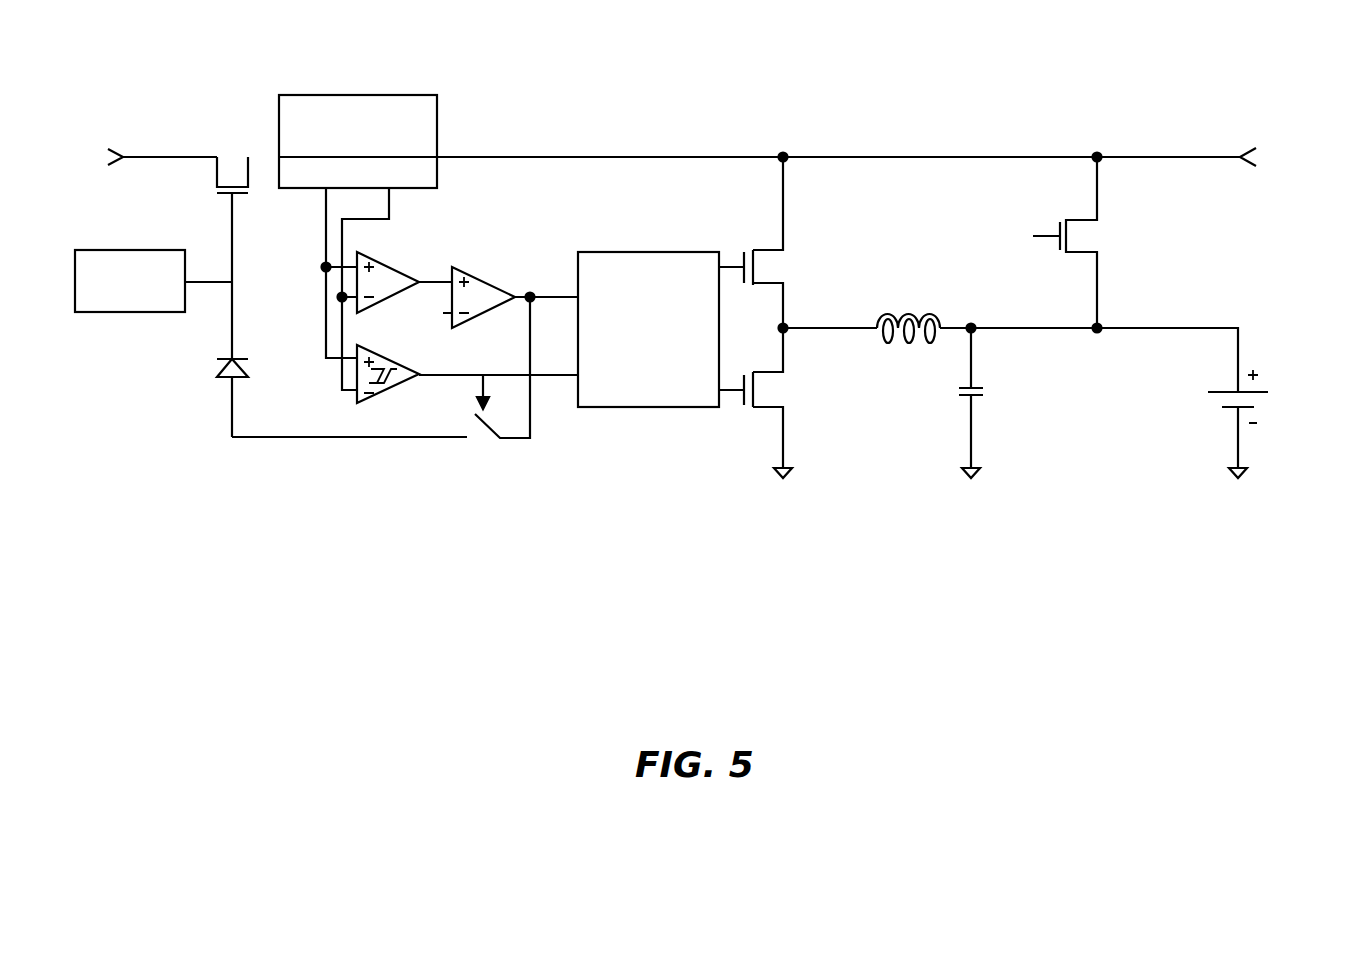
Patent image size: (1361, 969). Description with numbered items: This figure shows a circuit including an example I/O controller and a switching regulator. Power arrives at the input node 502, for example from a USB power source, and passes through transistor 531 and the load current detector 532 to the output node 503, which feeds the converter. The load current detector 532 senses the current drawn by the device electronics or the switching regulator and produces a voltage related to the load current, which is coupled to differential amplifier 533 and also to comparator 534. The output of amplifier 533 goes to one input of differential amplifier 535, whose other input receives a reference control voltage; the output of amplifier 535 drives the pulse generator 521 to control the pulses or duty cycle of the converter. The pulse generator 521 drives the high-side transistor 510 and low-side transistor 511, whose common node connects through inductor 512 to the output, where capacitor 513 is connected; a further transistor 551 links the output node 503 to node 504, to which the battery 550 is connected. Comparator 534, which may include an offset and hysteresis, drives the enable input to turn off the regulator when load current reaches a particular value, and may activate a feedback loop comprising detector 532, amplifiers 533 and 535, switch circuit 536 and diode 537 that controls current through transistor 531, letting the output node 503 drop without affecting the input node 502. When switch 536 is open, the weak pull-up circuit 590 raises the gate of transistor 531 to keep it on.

The input node 502 is at (153, 159).
The output node 503 is at (1222, 157).
The battery node 504 is at (1165, 332).
The high-side transistor M1 510 is at (778, 242).
The low-side transistor M2 511 is at (778, 403).
The inductor L1 512 is at (908, 330).
The capacitor C1 513 is at (946, 403).
The pulse generator 521 is at (668, 402).
The transistor 531 is at (232, 228).
The load current detector 532 is at (405, 95).
The differential amplifier 533 is at (400, 268).
The comparator 534 is at (358, 404).
The differential amplifier 535 is at (487, 272).
The switch circuit 536 is at (381, 405).
The diode 537 is at (206, 387).
The battery Vbatt 550 is at (1266, 424).
The transistor M3 551 is at (1070, 242).
The weak pull-up circuit 590 is at (85, 313).